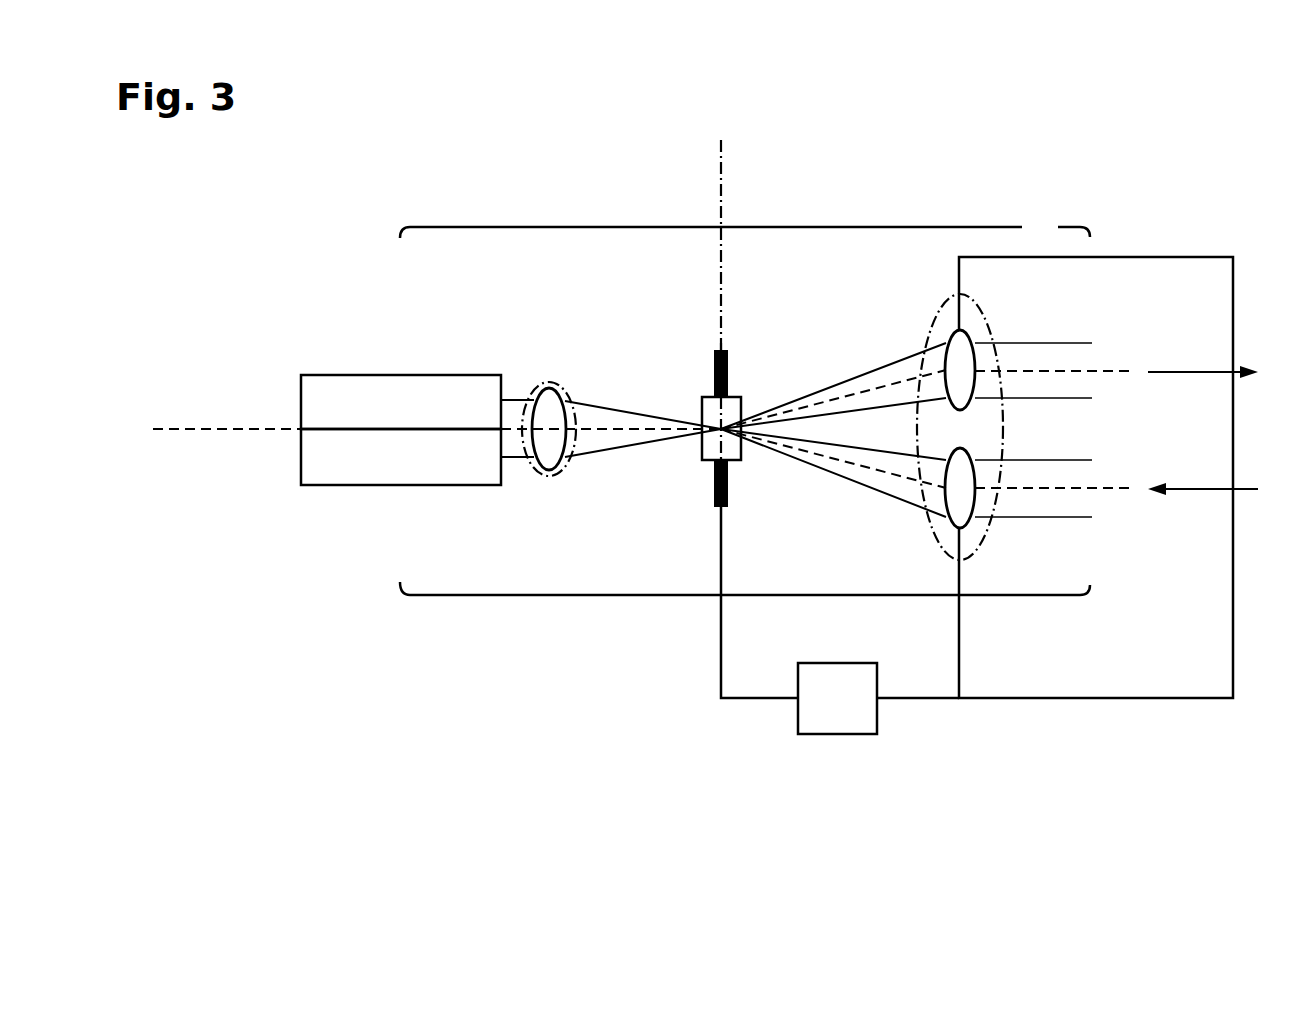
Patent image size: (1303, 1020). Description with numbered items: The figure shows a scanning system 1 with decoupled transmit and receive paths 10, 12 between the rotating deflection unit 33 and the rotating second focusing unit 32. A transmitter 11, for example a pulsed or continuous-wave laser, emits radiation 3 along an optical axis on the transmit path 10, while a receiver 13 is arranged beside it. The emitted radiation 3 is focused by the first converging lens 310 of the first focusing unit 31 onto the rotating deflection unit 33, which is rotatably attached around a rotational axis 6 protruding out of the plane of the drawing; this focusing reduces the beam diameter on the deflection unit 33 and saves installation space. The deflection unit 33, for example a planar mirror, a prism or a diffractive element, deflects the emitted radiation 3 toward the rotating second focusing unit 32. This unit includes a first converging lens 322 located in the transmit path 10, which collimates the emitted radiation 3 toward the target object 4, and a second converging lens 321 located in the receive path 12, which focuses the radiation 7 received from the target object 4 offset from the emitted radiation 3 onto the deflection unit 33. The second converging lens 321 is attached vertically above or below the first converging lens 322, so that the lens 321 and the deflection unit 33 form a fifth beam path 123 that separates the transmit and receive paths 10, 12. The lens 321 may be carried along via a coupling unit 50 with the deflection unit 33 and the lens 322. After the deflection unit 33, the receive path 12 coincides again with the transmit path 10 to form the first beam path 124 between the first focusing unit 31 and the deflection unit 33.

The scanning system 1 is at (300, 233).
The emitted radiation 3 is at (512, 408).
The target object 4 is at (1285, 387).
The rotational axis 6 is at (723, 143).
The received radiation 7 is at (1088, 502).
The transmit path 10 is at (680, 227).
The transmitter 11 is at (310, 393).
The receive path 12 is at (680, 595).
The receiver 13 is at (310, 457).
The first focusing unit 31 is at (555, 384).
The rotating second focusing unit 32 is at (968, 295).
The rotating deflection unit 33 is at (741, 396).
The coupling unit 50 is at (838, 708).
The fifth beam path 123 is at (838, 465).
The first beam path 124 is at (615, 437).
The first converging lens 310 is at (547, 470).
The second converging lens 321 is at (972, 528).
The first converging lens 322 is at (975, 331).